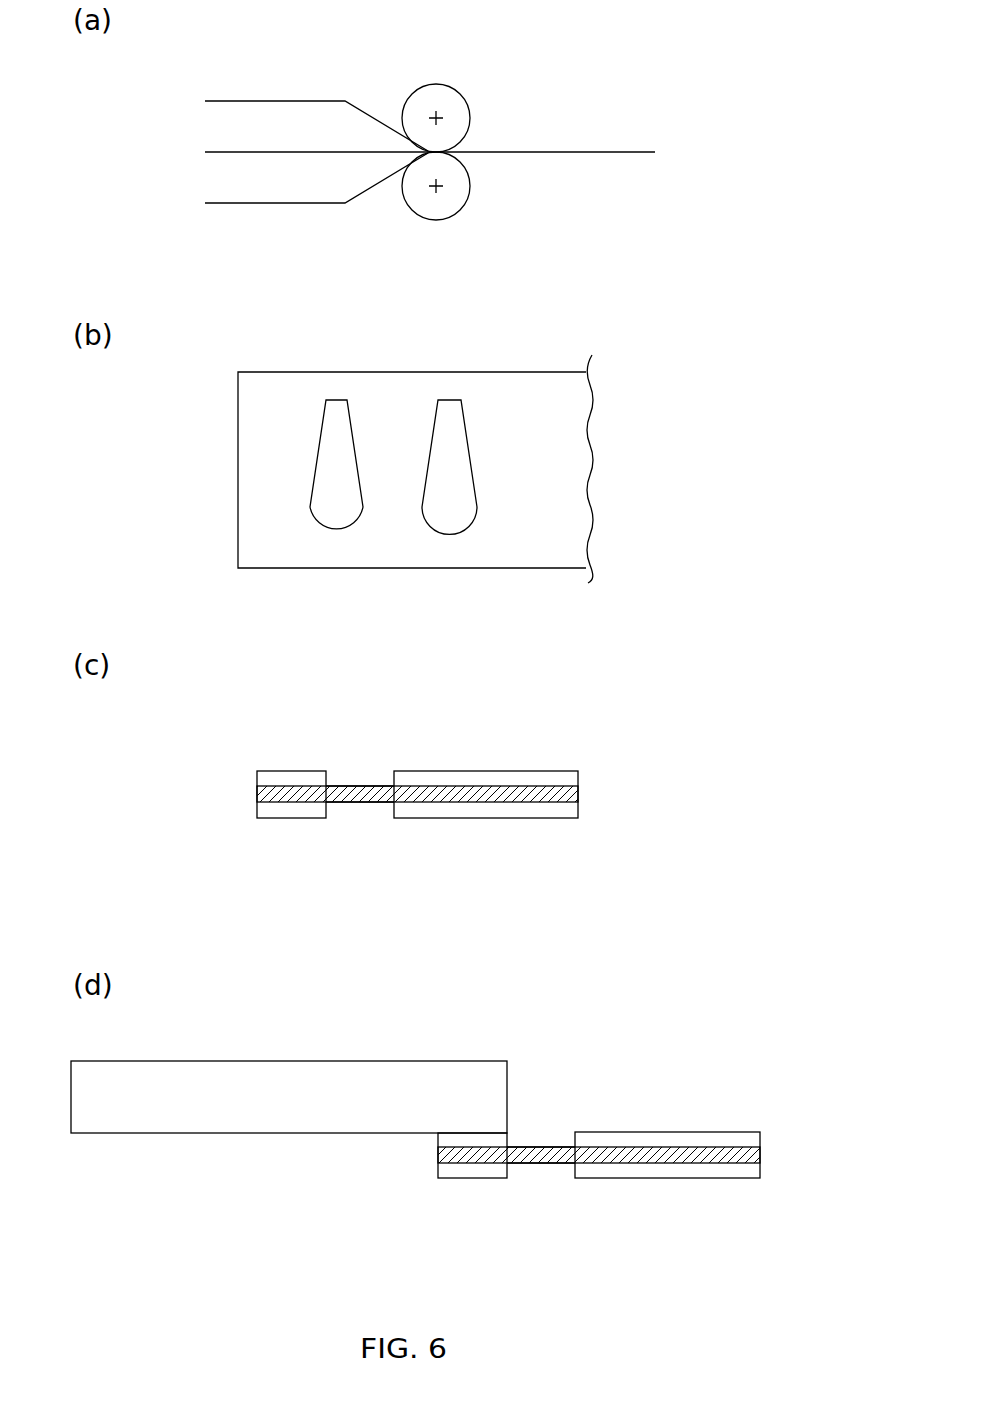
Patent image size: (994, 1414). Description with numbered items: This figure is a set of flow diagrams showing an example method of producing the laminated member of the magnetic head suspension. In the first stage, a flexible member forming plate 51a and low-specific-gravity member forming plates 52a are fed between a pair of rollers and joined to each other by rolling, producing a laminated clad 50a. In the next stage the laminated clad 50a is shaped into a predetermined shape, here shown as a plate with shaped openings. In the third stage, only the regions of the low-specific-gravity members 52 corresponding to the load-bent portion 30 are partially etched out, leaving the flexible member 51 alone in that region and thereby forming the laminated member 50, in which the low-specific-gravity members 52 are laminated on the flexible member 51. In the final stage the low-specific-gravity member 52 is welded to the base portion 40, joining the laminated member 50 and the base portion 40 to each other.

The low-specific-gravity member forming plate 52a is at (275, 100).
The flexible member forming plate 51a is at (240, 153).
The laminated clad 50a is at (579, 152).
The laminated member 50 is at (285, 728).
The load-bent portion 30 is at (362, 767).
The low-specific-gravity member 52 is at (530, 776).
The flexible member 51 is at (572, 793).
The base portion 40 is at (255, 1048).